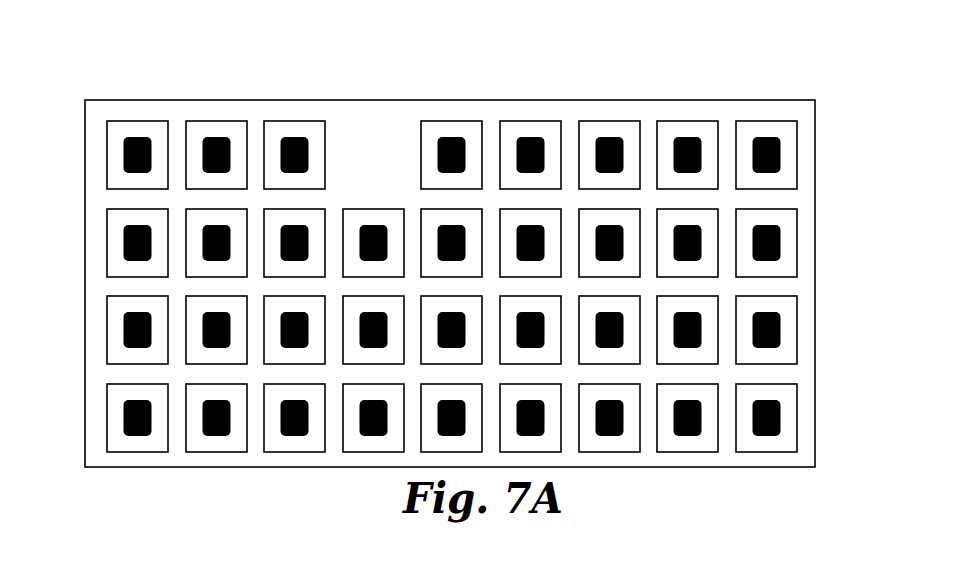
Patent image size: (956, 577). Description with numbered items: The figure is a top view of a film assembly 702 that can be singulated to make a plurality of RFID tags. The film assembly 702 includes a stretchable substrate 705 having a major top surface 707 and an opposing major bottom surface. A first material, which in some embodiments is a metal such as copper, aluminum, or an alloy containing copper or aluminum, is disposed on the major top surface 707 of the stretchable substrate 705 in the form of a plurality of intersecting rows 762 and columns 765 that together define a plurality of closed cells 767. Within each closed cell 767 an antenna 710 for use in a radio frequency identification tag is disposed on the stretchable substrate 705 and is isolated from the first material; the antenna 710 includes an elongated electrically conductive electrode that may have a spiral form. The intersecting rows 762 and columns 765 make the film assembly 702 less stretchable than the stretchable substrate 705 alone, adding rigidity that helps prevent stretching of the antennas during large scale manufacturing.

The film assembly 702 is at (775, 52).
The stretchable substrate 705 is at (140, 128).
The major top surface 707 is at (213, 128).
The antenna 710 is at (123, 242).
The rows 762 is at (790, 287).
The columns 765 is at (568, 130).
The closed cells 767 is at (352, 215).